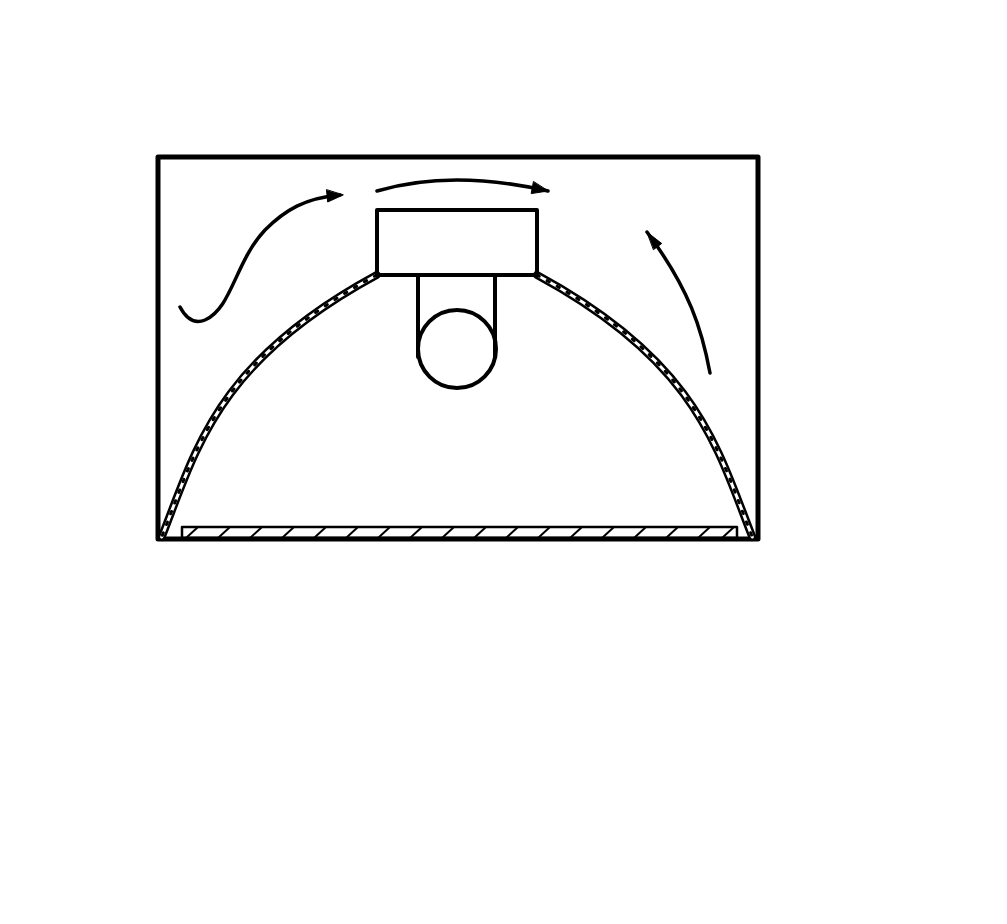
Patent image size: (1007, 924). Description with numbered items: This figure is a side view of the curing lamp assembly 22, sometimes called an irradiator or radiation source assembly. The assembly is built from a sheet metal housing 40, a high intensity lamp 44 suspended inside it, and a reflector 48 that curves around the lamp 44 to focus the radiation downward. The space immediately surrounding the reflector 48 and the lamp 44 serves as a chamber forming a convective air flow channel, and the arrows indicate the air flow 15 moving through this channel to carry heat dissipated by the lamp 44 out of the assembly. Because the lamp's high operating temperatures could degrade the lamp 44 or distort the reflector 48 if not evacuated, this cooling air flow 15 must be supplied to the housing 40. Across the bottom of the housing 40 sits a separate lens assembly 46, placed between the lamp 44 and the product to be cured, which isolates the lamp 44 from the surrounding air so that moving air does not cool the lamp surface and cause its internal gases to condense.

The curing lamp assembly 22 is at (783, 113).
The sheet metal housing 40 is at (158, 308).
The air flow 15 is at (242, 272).
The high intensity lamp 44 is at (458, 358).
The lens assembly 46 is at (280, 535).
The reflector 48 is at (702, 433).